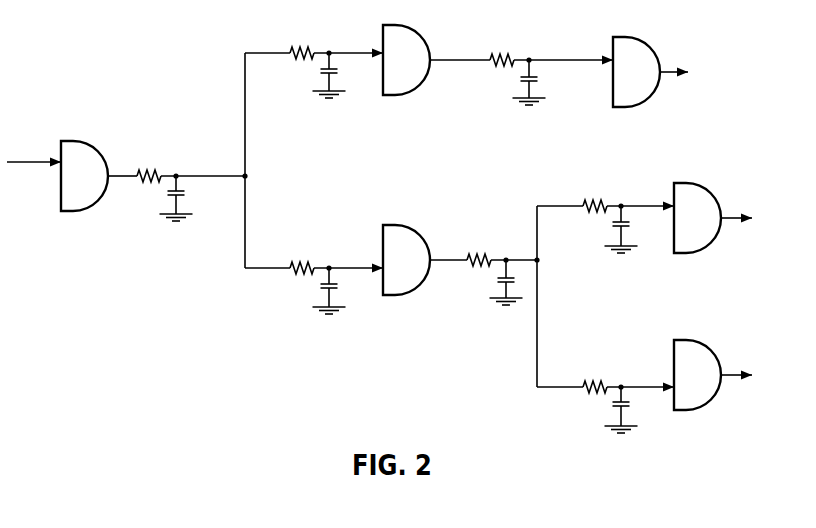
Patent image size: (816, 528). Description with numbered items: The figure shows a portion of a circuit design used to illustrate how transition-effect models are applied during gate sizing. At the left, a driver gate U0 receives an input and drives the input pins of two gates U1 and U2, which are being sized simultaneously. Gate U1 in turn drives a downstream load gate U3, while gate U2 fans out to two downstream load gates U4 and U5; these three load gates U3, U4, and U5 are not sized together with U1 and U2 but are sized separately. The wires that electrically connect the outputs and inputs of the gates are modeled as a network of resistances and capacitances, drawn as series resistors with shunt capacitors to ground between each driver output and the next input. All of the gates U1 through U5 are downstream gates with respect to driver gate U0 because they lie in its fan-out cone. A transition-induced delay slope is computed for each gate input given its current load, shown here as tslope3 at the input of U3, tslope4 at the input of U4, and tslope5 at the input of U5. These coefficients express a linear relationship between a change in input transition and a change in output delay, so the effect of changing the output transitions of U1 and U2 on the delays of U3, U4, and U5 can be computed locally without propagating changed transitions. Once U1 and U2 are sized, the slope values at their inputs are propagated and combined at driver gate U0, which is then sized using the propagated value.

The driver gate U0 is at (84, 176).
The gate U1 is at (406, 60).
The gate U2 is at (406, 260).
The downstream gate U3 is at (636, 72).
The downstream gate U4 is at (697, 218).
The downstream gate U5 is at (697, 375).
The transition-induced delay slope tslope3 is at (563, 45).
The transition-induced delay slope tslope4 is at (639, 187).
The transition-induced delay slope tslope5 is at (639, 369).